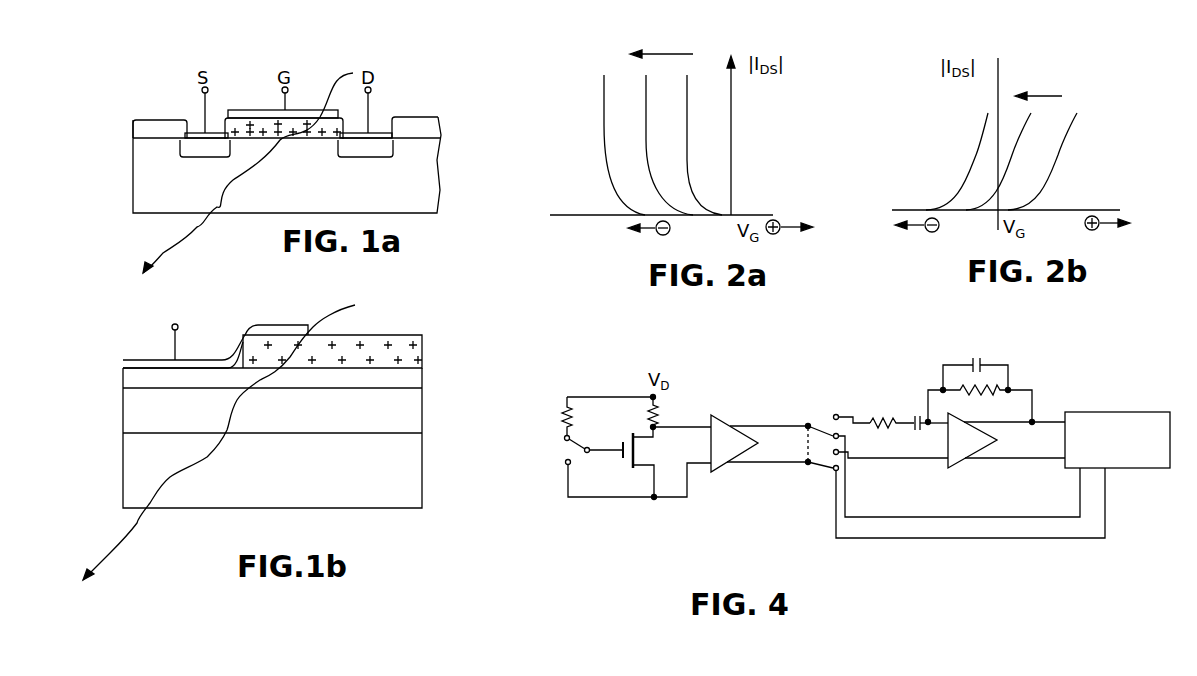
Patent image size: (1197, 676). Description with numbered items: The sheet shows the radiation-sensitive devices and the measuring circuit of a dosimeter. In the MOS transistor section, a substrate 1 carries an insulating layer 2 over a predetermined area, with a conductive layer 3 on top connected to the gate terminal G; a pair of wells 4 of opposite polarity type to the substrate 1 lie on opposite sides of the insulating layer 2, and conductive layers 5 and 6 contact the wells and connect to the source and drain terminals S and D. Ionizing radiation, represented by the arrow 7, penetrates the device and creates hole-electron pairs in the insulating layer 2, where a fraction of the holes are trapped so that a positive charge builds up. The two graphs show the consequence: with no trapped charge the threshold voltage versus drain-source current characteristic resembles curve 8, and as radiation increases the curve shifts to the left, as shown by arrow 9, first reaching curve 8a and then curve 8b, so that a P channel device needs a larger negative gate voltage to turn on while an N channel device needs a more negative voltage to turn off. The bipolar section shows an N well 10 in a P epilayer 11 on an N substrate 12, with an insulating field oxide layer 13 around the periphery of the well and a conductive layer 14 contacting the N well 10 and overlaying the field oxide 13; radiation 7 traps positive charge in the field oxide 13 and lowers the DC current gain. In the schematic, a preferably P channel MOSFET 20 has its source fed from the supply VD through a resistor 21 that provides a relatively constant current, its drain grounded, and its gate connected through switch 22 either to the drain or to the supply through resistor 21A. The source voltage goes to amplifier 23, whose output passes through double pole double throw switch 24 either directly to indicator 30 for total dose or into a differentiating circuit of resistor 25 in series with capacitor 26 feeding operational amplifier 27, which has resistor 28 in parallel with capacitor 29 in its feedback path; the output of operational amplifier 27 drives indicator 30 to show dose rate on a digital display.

In FIG. 1A, the substrate 1 is at (423, 168).
In FIG. 1A, the insulating layer 2 is at (238, 108).
In FIG. 1A, the conductive layer 3 is at (300, 110).
In FIG. 1A, the wells 4 is at (208, 158).
In FIG. 1A, the conductive layer 5 is at (192, 137).
In FIG. 1A, the conductive layer 6 is at (358, 137).
In FIG. 1A, the ionizing radiation arrow 7 is at (192, 240).
In FIG. 1B, the ionizing radiation arrow 7 is at (164, 532).
In FIG. 2A, the curve 8 is at (691, 148).
In FIG. 2B, the curve 8 is at (1053, 173).
In FIG. 2A, the curve 8a is at (653, 148).
In FIG. 2B, the curve 8a is at (1008, 177).
In FIG. 2A, the curve 8b is at (612, 148).
In FIG. 2B, the curve 8b is at (970, 170).
In FIG. 2A, the arrow 9 is at (677, 54).
In FIG. 2B, the arrow 9 is at (1050, 96).
In FIG. 1B, the N well 10 is at (132, 377).
In FIG. 1B, the P epilayer 11 is at (138, 413).
In FIG. 1B, the N substrate 12 is at (138, 472).
In FIG. 1B, the insulating field oxide layer 13 is at (350, 340).
In FIG. 1B, the conductive layer 14 is at (193, 362).
In FIG. 4, the MOSFET 20 is at (633, 468).
In FIG. 4, the resistor 21 is at (660, 412).
In FIG. 4, the resistor 21A is at (566, 405).
In FIG. 4, the switch 22 is at (573, 450).
In FIG. 4, the amplifier 23 is at (730, 472).
In FIG. 4, the double pole double throw switch 24 is at (806, 476).
In FIG. 4, the resistor 25 is at (868, 418).
In FIG. 4, the capacitor 26 is at (912, 420).
In FIG. 4, the operational amplifier 27 is at (963, 460).
In FIG. 4, the resistor 28 is at (987, 393).
In FIG. 4, the capacitor 29 is at (987, 362).
In FIG. 4, the indicator 30 is at (1112, 411).